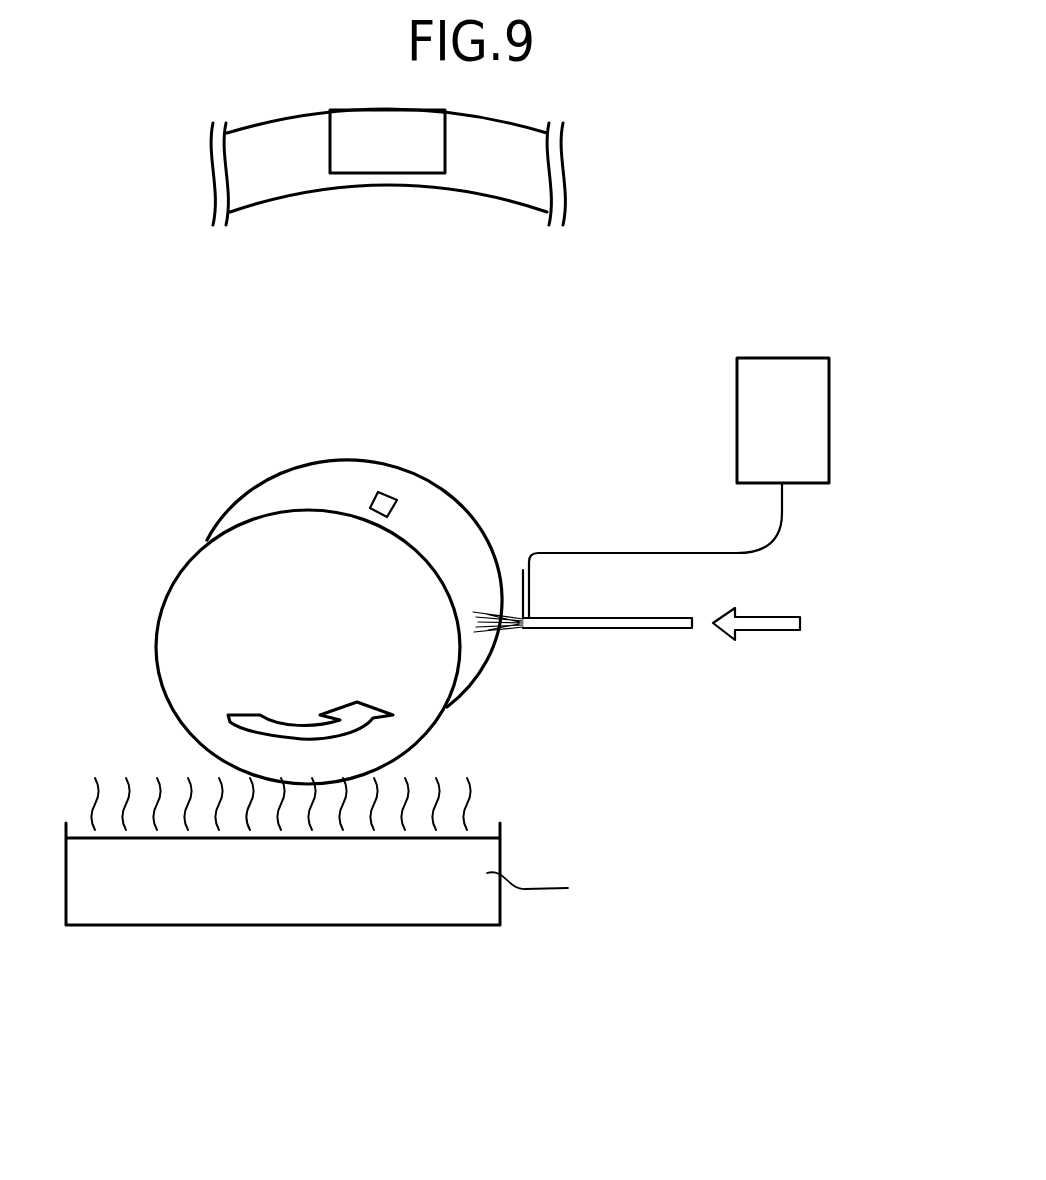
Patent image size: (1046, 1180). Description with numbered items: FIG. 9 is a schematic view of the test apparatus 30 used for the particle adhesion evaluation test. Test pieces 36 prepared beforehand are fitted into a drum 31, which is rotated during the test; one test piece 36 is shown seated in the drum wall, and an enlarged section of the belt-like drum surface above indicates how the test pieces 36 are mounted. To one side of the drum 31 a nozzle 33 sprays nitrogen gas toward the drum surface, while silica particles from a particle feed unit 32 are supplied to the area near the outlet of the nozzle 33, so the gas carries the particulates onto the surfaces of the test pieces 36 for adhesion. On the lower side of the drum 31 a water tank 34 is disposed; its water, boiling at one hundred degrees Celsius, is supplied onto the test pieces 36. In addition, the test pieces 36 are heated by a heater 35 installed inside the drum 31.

The test apparatus 30 is at (103, 333).
The drum 31 is at (273, 187).
The particle feed unit 32 is at (797, 368).
The nozzle 33 is at (640, 620).
The water tank 34 is at (417, 898).
The heater 35 is at (425, 695).
The test pieces 36 is at (408, 155).